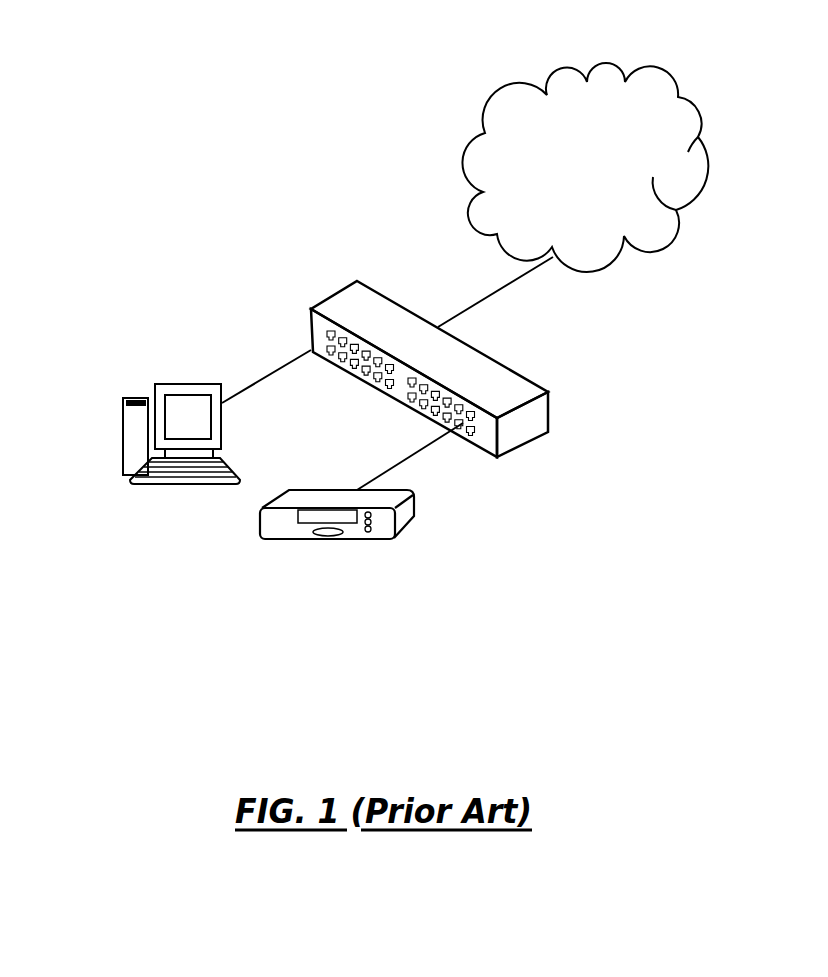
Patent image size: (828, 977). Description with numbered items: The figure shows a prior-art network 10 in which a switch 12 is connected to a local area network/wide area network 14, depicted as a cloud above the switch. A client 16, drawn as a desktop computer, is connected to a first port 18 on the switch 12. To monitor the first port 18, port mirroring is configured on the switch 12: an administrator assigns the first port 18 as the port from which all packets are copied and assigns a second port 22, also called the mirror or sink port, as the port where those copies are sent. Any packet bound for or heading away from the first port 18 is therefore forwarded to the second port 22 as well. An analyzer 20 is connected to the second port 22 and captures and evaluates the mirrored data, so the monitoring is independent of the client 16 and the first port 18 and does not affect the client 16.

The network 10 is at (321, 94).
The switch 12 is at (357, 281).
The local area network (LAN)/wide area network (WAN) 14 is at (505, 85).
The client 16 is at (125, 393).
The first port 18 is at (278, 368).
The analyzer 20 is at (392, 540).
The second port 22 is at (412, 458).